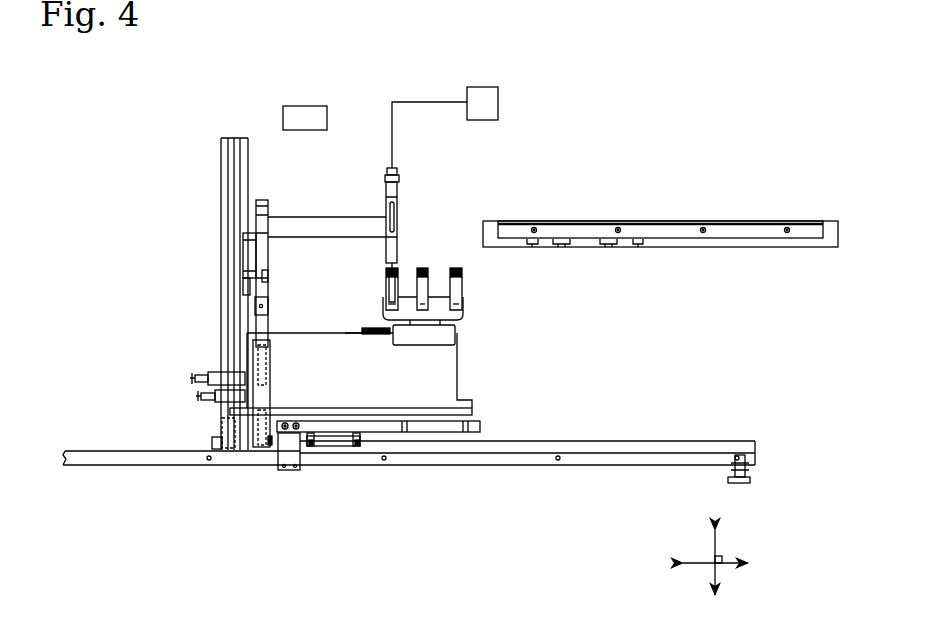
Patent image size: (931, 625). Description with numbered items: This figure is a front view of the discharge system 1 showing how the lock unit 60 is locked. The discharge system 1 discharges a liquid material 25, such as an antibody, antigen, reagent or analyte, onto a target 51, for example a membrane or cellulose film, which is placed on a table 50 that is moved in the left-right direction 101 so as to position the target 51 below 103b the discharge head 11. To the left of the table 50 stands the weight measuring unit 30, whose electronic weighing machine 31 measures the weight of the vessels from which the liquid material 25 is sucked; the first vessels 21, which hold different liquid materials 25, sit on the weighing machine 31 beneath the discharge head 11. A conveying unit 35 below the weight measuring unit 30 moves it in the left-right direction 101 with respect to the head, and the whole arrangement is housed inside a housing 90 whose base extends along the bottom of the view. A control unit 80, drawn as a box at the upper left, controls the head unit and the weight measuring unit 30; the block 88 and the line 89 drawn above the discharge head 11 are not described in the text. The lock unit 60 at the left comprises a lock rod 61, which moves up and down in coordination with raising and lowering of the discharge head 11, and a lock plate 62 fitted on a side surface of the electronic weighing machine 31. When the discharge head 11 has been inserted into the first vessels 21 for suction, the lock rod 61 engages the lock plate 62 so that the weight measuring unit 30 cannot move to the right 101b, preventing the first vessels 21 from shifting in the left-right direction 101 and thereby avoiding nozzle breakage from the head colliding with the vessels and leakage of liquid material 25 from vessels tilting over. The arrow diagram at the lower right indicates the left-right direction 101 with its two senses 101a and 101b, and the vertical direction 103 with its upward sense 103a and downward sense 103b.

The discharge system 1 is at (630, 132).
The discharge head 11 is at (400, 181).
The first vessels 21 is at (398, 278).
The liquid material 25 is at (398, 295).
The weight measuring unit 30 is at (468, 344).
The electronic weighing machine 31 is at (448, 378).
The conveying unit 35 is at (300, 448).
The table 50 is at (745, 230).
The target 51 is at (695, 221).
The lock unit 60 is at (208, 280).
The lock rod 61 is at (262, 330).
The lock plate 62 is at (262, 395).
The control unit 80 is at (320, 98).
The sensor 88 is at (493, 106).
The cable 89 is at (416, 102).
The housing 90 is at (627, 455).
The left-right direction 101 is at (732, 564).
The horizontal direction a 101a is at (647, 548).
The right 101b is at (783, 548).
The vertical axis 103 is at (717, 549).
The upward direction 103a is at (702, 512).
The below 103b is at (702, 605).